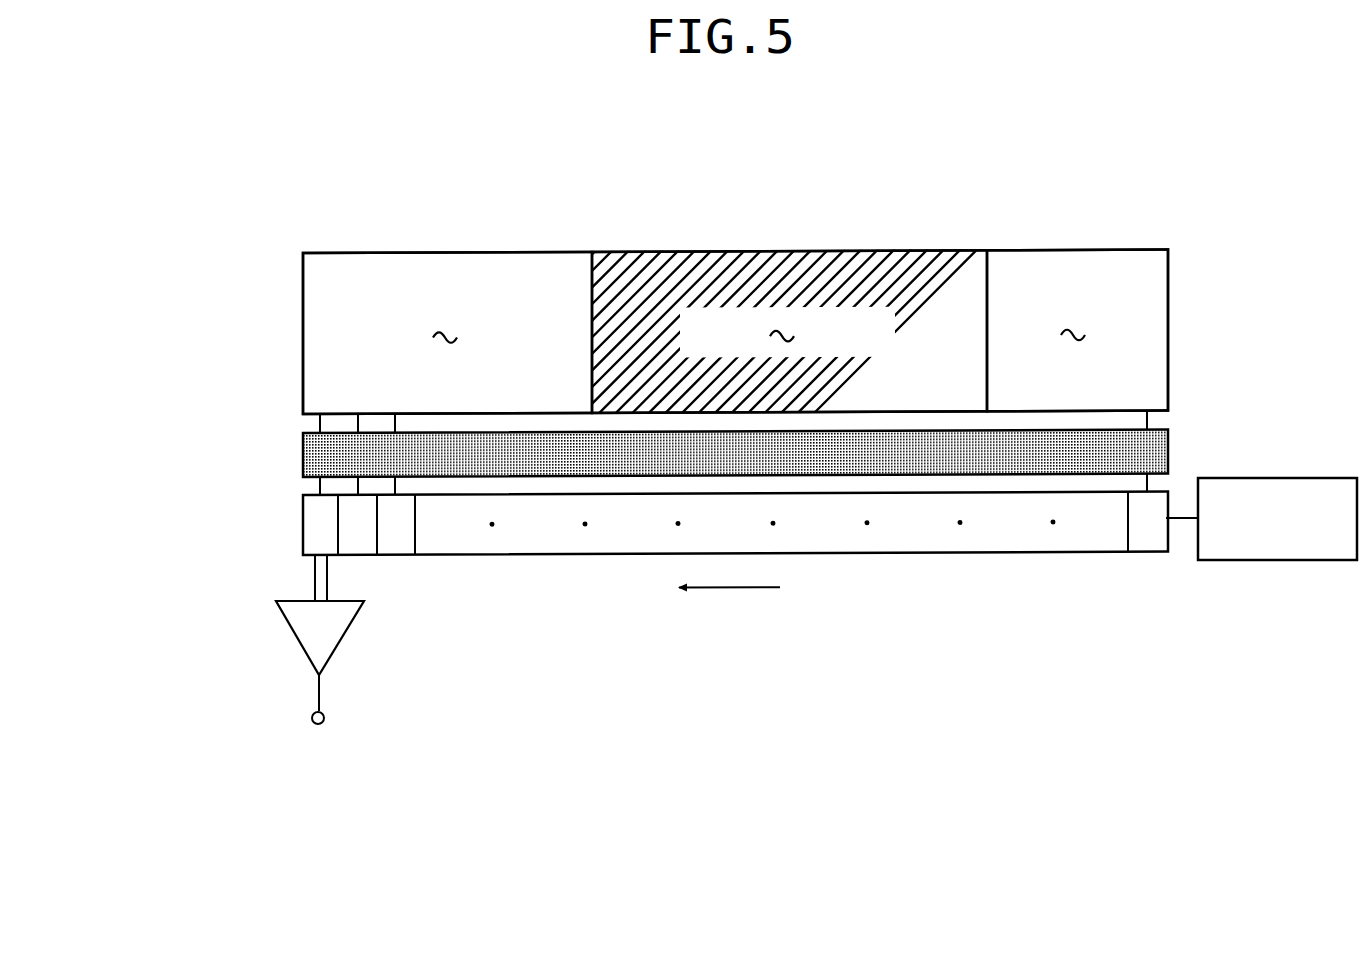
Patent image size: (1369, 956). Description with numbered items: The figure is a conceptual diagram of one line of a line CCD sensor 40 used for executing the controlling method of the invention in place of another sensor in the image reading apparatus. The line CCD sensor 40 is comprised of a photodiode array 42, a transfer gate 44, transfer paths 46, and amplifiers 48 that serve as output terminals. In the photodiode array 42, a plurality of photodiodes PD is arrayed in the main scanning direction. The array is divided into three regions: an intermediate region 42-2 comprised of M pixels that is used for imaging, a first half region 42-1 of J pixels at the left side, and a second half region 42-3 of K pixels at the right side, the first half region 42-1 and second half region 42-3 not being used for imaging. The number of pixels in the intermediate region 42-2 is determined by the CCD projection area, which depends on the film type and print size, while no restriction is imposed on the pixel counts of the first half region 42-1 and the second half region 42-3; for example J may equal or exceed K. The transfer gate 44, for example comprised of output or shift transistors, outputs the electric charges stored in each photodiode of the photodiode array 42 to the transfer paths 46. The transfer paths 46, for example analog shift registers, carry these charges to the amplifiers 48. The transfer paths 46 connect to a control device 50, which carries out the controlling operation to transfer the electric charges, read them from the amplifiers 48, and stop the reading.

The line CCD sensor 40 is at (940, 194).
The photodiode array 42 is at (286, 280).
The first half region 42-1 is at (444, 252).
The intermediate region 42-2 is at (796, 252).
The second half region 42-3 is at (1086, 252).
The transfer gate 44 is at (290, 456).
The transfer paths 46 is at (288, 538).
The amplifiers 48 is at (290, 664).
The control device 50 is at (1284, 477).